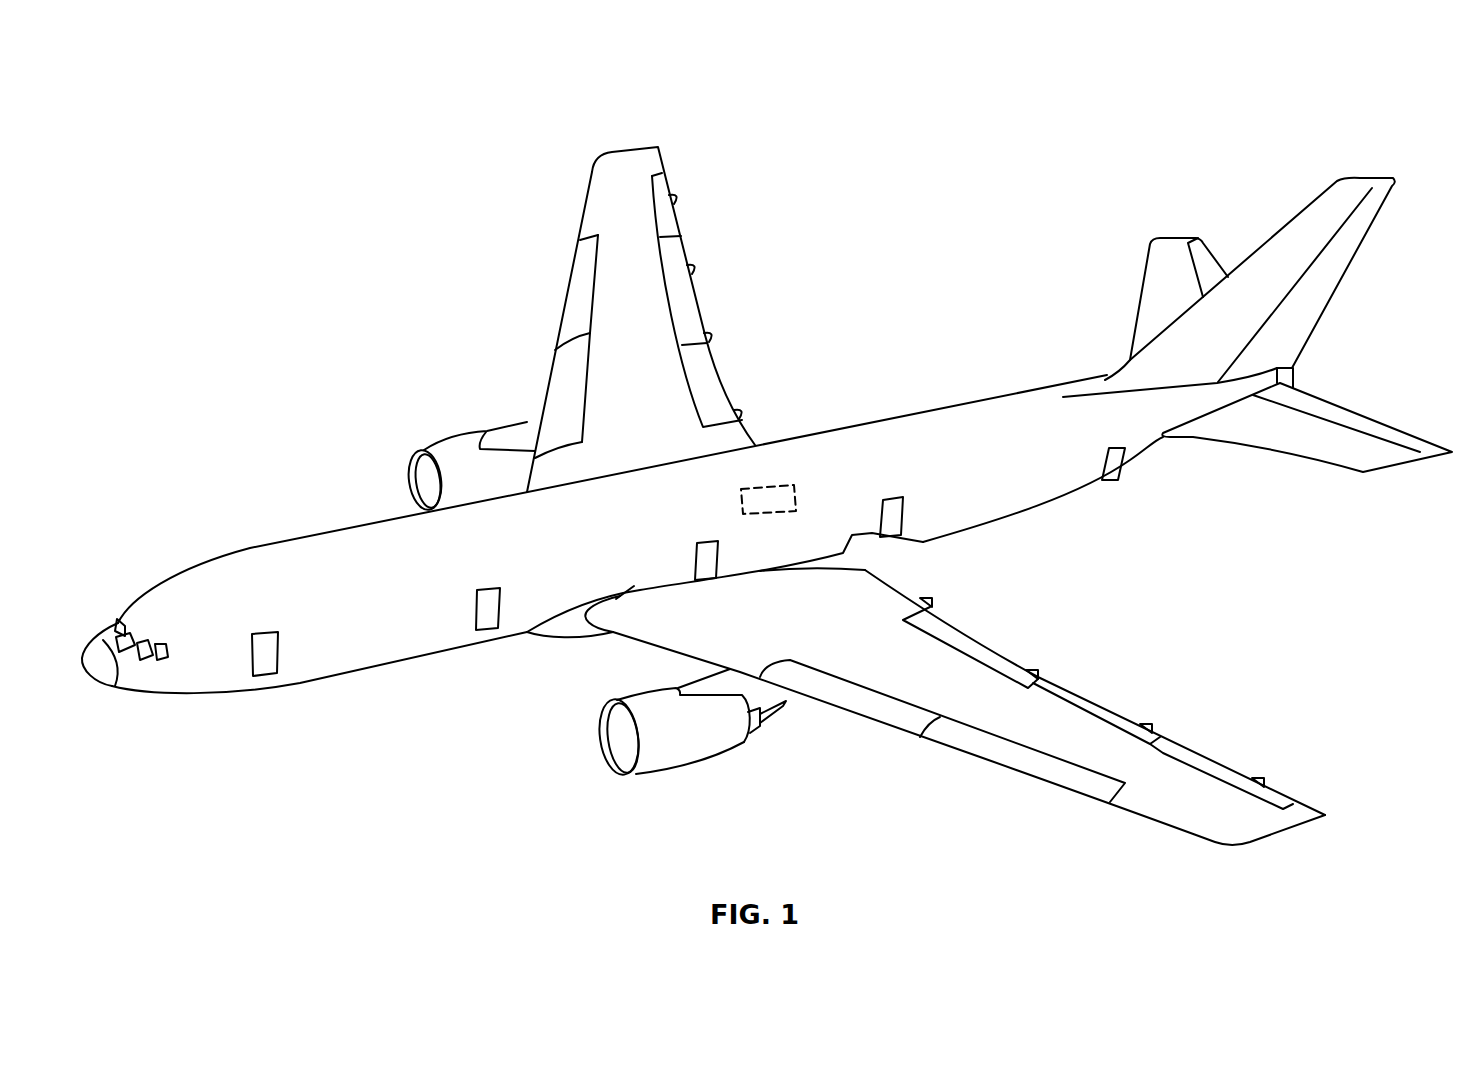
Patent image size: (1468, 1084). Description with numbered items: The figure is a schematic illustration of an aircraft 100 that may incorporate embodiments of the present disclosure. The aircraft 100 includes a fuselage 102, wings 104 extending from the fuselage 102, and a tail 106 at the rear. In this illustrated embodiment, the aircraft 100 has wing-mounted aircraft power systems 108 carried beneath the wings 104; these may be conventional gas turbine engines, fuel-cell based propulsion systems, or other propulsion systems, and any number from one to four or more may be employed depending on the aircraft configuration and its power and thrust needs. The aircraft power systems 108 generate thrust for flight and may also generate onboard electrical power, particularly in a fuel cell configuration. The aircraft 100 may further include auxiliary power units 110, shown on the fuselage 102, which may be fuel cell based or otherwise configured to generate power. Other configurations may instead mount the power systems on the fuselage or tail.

The aircraft 100 is at (1339, 115).
The fuselage 102 is at (843, 448).
The wings 104 is at (657, 317).
The tail 106 is at (1283, 378).
The wing-mounted aircraft power systems 108 is at (448, 460).
The auxiliary power units 110 is at (778, 484).